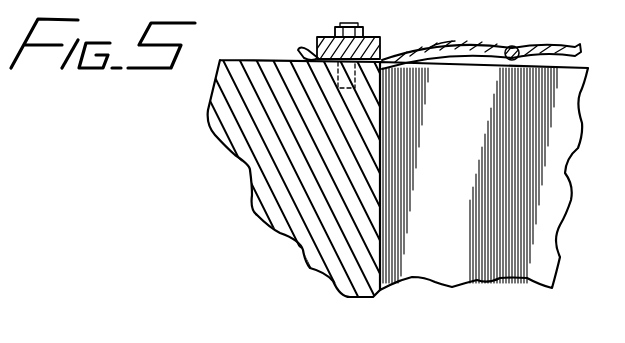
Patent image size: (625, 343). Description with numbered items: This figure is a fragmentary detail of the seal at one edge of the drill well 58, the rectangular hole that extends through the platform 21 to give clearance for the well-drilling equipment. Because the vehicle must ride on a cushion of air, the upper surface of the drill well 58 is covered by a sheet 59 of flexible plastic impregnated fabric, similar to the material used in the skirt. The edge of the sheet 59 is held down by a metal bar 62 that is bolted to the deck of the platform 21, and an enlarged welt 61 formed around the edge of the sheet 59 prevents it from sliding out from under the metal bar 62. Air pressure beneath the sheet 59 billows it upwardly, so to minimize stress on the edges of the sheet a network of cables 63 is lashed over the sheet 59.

The platform 21 is at (250, 170).
The drill well 58 is at (445, 266).
The sheet 59 is at (430, 46).
The welt 61 is at (301, 50).
The metal bar 62 is at (382, 60).
The cables 63 is at (512, 46).